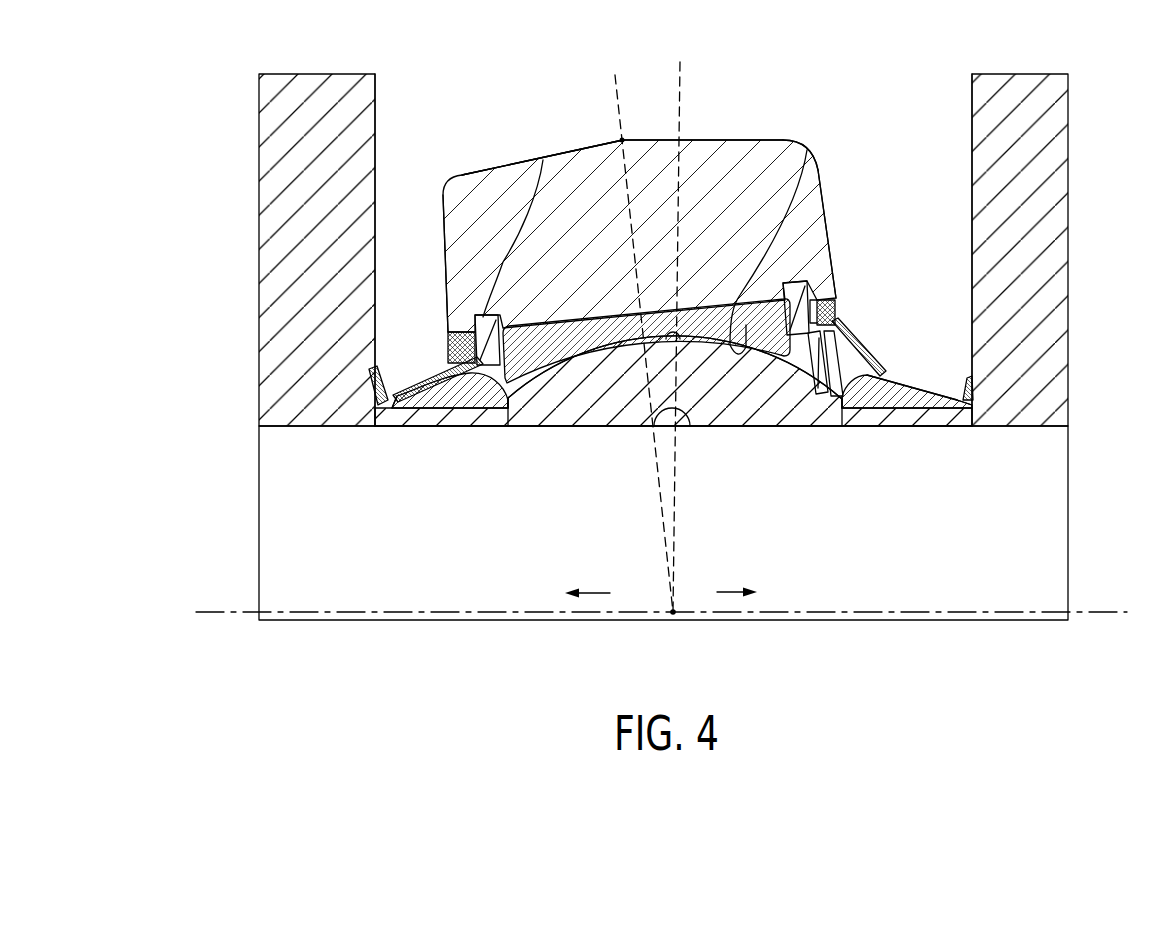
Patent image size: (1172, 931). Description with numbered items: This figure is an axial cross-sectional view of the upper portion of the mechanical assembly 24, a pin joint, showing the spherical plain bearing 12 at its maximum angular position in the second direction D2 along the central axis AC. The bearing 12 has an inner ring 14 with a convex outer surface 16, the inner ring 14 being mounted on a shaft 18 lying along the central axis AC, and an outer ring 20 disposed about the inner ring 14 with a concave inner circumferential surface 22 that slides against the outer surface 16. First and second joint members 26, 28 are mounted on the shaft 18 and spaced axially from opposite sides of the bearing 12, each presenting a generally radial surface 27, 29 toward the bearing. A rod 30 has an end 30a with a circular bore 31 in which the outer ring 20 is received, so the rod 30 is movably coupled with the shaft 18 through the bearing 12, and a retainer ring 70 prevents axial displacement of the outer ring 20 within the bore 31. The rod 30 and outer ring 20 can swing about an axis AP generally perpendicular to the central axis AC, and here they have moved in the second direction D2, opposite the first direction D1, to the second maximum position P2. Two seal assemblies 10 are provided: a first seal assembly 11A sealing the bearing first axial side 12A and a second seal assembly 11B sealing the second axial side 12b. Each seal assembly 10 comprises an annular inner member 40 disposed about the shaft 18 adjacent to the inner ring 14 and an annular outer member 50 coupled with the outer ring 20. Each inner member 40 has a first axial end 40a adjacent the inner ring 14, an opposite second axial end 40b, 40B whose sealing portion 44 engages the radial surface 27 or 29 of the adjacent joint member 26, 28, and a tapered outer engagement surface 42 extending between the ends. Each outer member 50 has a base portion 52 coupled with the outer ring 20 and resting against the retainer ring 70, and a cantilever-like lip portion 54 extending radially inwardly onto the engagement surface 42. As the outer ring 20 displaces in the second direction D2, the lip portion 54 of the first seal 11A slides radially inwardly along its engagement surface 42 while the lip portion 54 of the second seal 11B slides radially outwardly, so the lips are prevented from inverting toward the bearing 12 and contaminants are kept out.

The seal assembly 10 is at (418, 214).
The first seal assembly 11A is at (468, 439).
The second seal assembly 11B is at (941, 443).
The spherical plain bearing 12 is at (576, 450).
The bearing first axial side 12A is at (504, 439).
The bearing second axial side 12b is at (859, 425).
The inner ring 14 is at (717, 425).
The convex outer surface 16 is at (593, 357).
The shaft 18 is at (245, 498).
The outer ring 20 is at (556, 306).
The concave inner circumferential surface 22 is at (807, 150).
The mechanical assembly 24 is at (479, 130).
The first joint member 26 is at (245, 183).
The radial surface of first joint member 27 is at (377, 104).
The second joint member 28 is at (1082, 230).
The radial surface of second joint member 29 is at (972, 143).
The rod 30 is at (750, 129).
The rod end 30a is at (572, 163).
The circular bore 31 is at (593, 345).
The seal inner member 40 is at (444, 412).
The first axial end of inner member 40a is at (510, 398).
The second axial end of inner member 40b is at (392, 408).
The second axial end of inner member 40B is at (968, 405).
The outer engagement surface 42 is at (923, 383).
The sealing portion 44 is at (378, 386).
The seal outer member 50 is at (410, 287).
The base portion 52 is at (448, 332).
The lip portion 54 is at (413, 382).
The retainer ring 70 is at (543, 160).
The second maximum axial position P2 is at (622, 140).
The perpendicular axis AP is at (673, 612).
The first direction D1 is at (737, 575).
The second direction D2 is at (588, 579).
The central axis AC is at (1108, 610).